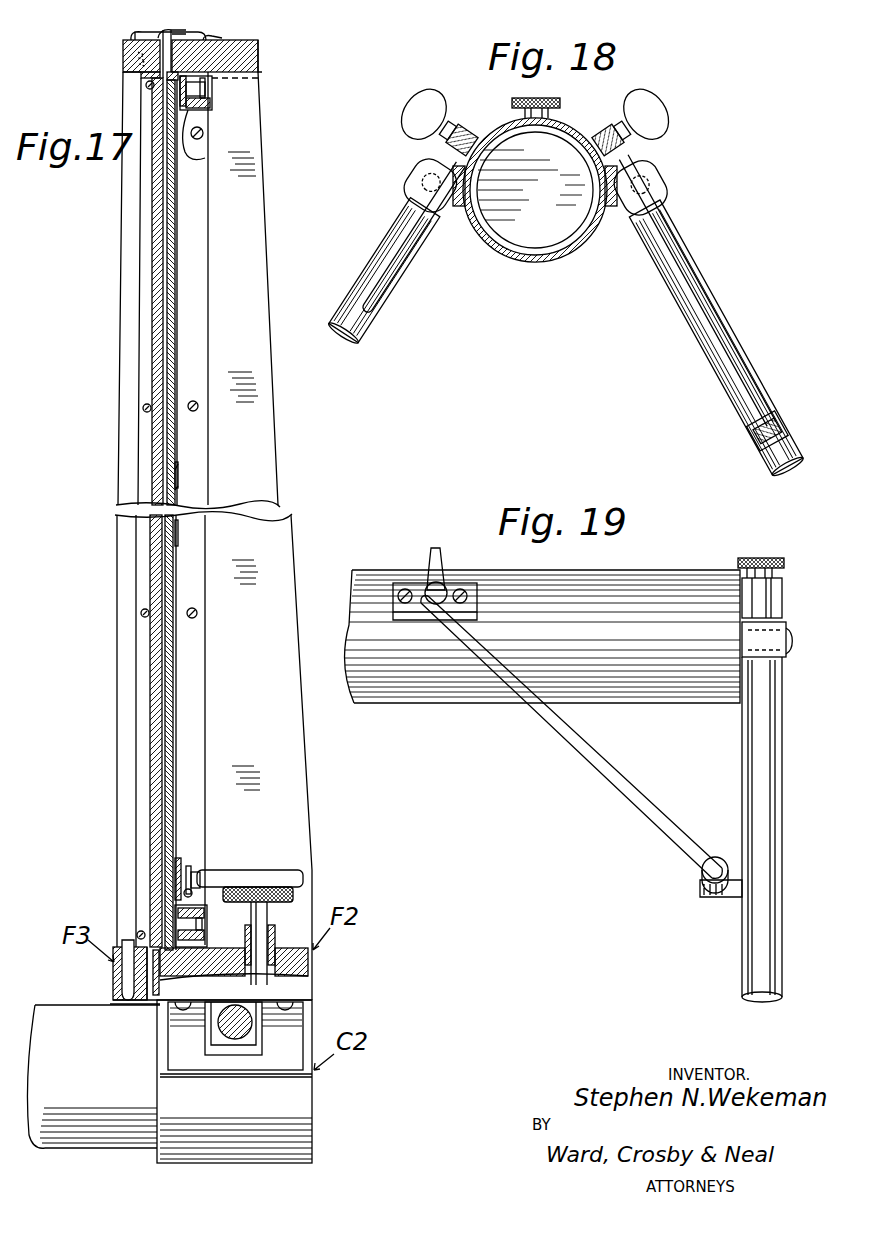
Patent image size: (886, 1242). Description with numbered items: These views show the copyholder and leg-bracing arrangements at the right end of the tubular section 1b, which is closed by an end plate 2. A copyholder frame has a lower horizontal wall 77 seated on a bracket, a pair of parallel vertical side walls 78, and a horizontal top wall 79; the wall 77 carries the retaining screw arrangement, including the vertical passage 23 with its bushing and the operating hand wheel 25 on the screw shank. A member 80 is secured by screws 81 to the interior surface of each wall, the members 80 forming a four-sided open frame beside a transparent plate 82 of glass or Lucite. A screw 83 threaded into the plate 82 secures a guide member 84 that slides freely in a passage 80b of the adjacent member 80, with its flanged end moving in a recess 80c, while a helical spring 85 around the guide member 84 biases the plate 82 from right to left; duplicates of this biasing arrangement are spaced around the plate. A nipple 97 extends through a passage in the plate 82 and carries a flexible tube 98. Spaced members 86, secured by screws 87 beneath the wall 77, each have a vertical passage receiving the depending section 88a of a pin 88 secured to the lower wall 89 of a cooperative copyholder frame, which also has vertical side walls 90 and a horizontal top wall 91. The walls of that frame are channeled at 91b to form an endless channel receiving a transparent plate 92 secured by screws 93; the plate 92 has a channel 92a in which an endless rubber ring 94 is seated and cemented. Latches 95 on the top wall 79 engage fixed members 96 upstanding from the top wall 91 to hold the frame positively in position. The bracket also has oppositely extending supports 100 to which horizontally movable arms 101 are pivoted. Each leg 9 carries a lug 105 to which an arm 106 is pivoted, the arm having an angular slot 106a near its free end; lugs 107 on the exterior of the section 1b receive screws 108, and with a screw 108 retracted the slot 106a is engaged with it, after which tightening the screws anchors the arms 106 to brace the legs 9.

In FIG. 17, the tubular section 1b is at (128, 1135).
In FIG. 18, the tubular section 1b is at (537, 262).
In FIG. 19, the tubular section 1b is at (476, 703).
In FIG. 18, the plate 2 is at (572, 244).
In FIG. 19, the plate 2 is at (738, 703).
In FIG. 18, the leg 9 is at (366, 326).
In FIG. 19, the leg 9 is at (748, 962).
In FIG. 17, the vertical passage 23 is at (270, 962).
In FIG. 17, the operating hand wheel 25 is at (298, 892).
In FIG. 17, the lower horizontal wall 77 is at (310, 966).
In FIG. 17, the vertical side wall 78 is at (258, 252).
In FIG. 17, the horizontal top wall 79 is at (255, 72).
In FIG. 17, the member 80 is at (196, 232).
In FIG. 17, the passage 80b is at (207, 157).
In FIG. 17, the recess 80c is at (212, 90).
In FIG. 17, the screw 81 is at (204, 133).
In FIG. 17, the transparent plate 82 is at (175, 310).
In FIG. 17, the screw 83 is at (220, 80).
In FIG. 17, the guide member 84 is at (212, 94).
In FIG. 17, the spring 85 is at (198, 68).
In FIG. 17, the member 86 is at (113, 992).
In FIG. 17, the screw 87 is at (184, 1012).
In FIG. 17, the pin 88 is at (127, 945).
In FIG. 17, the depending section 88a is at (130, 1002).
In FIG. 17, the lower wall 89 is at (113, 970).
In FIG. 17, the vertical side wall 90 is at (118, 712).
In FIG. 17, the horizontal top wall 91 is at (128, 42).
In FIG. 17, the channel 91b is at (124, 74).
In FIG. 17, the plate 92 is at (152, 545).
In FIG. 17, the channel 92a is at (165, 988).
In FIG. 17, the screw 93 is at (136, 56).
In FIG. 17, the rubber ring 94 is at (188, 962).
In FIG. 17, the latch 95 is at (176, 32).
In FIG. 17, the fixed member 96 is at (166, 32).
In FIG. 17, the nipple 97 is at (183, 874).
In FIG. 17, the flexible tube 98 is at (261, 870).
In FIG. 17, the support 100 is at (258, 1058).
In FIG. 17, the arm 101 is at (240, 1036).
In FIG. 18, the lug 105 is at (762, 430).
In FIG. 19, the lug 105 is at (710, 900).
In FIG. 18, the arm 106 is at (390, 270).
In FIG. 19, the arm 106 is at (612, 778).
In FIG. 18, the angular slot 106a is at (440, 150).
In FIG. 19, the angular slot 106a is at (414, 585).
In FIG. 18, the lug 107 is at (466, 134).
In FIG. 19, the lug 107 is at (466, 590).
In FIG. 18, the screw 108 is at (412, 120).
In FIG. 19, the screw 108 is at (436, 548).